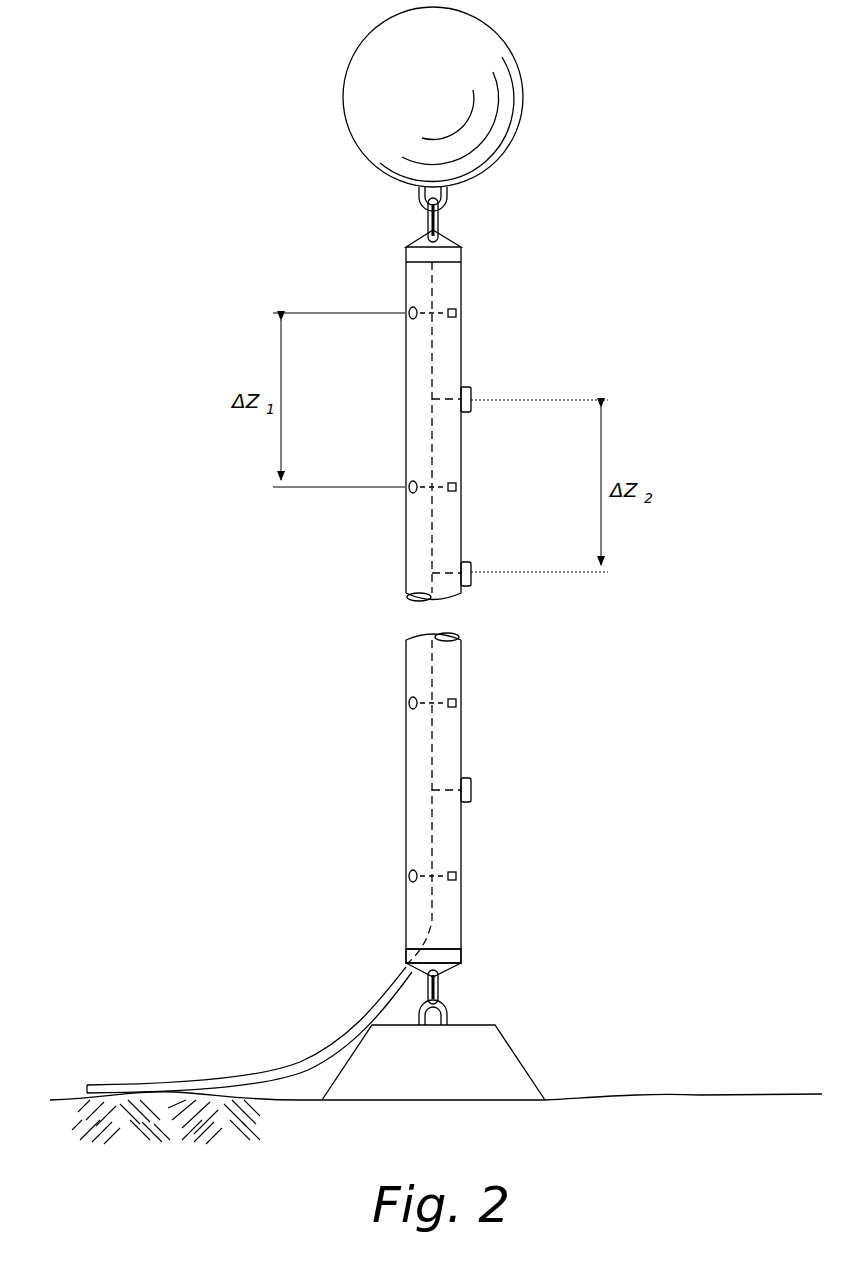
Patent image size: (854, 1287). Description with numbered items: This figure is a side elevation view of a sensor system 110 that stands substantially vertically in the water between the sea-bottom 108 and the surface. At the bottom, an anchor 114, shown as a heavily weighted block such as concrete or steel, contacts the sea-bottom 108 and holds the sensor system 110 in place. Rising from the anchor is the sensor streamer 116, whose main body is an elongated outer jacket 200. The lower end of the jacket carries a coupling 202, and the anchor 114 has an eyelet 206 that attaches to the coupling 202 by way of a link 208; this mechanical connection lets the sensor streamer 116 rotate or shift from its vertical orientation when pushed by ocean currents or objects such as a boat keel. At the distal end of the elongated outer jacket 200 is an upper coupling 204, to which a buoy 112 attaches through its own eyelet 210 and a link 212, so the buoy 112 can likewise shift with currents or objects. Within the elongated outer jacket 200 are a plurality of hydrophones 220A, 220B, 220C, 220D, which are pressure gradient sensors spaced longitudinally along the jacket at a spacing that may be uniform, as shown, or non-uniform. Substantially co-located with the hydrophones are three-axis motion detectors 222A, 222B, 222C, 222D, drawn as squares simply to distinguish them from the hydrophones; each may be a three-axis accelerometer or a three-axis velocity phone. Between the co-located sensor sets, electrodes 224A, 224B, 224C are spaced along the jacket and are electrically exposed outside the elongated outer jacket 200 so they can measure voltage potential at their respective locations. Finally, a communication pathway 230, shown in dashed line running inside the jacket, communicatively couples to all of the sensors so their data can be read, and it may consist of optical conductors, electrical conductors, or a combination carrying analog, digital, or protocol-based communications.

The sea-bottom 108 is at (697, 1094).
The sensor system 110 is at (170, 214).
The buoy 112 is at (343, 97).
The anchor 114 is at (519, 1054).
The sensor streamer 116 is at (372, 628).
The elongated outer jacket 200 is at (412, 810).
The coupling 202 is at (463, 953).
The coupling 204 is at (462, 250).
The eyelet 206 is at (449, 1013).
The link 208 is at (440, 991).
The eyelet 210 is at (450, 207).
The link 212 is at (427, 220).
The hydrophone 220A is at (410, 308).
The hydrophone 220B is at (410, 484).
The hydrophone 220C is at (410, 700).
The hydrophone 220D is at (410, 873).
The three-axis motion detector 222A is at (457, 313).
The three-axis motion detector 222B is at (457, 487).
The three-axis motion detector 222C is at (457, 703).
The three-axis motion detector 222D is at (457, 876).
The electrode 224A is at (471, 389).
The electrode 224B is at (471, 564).
The electrode 224C is at (471, 780).
The communication pathway 230 is at (430, 415).